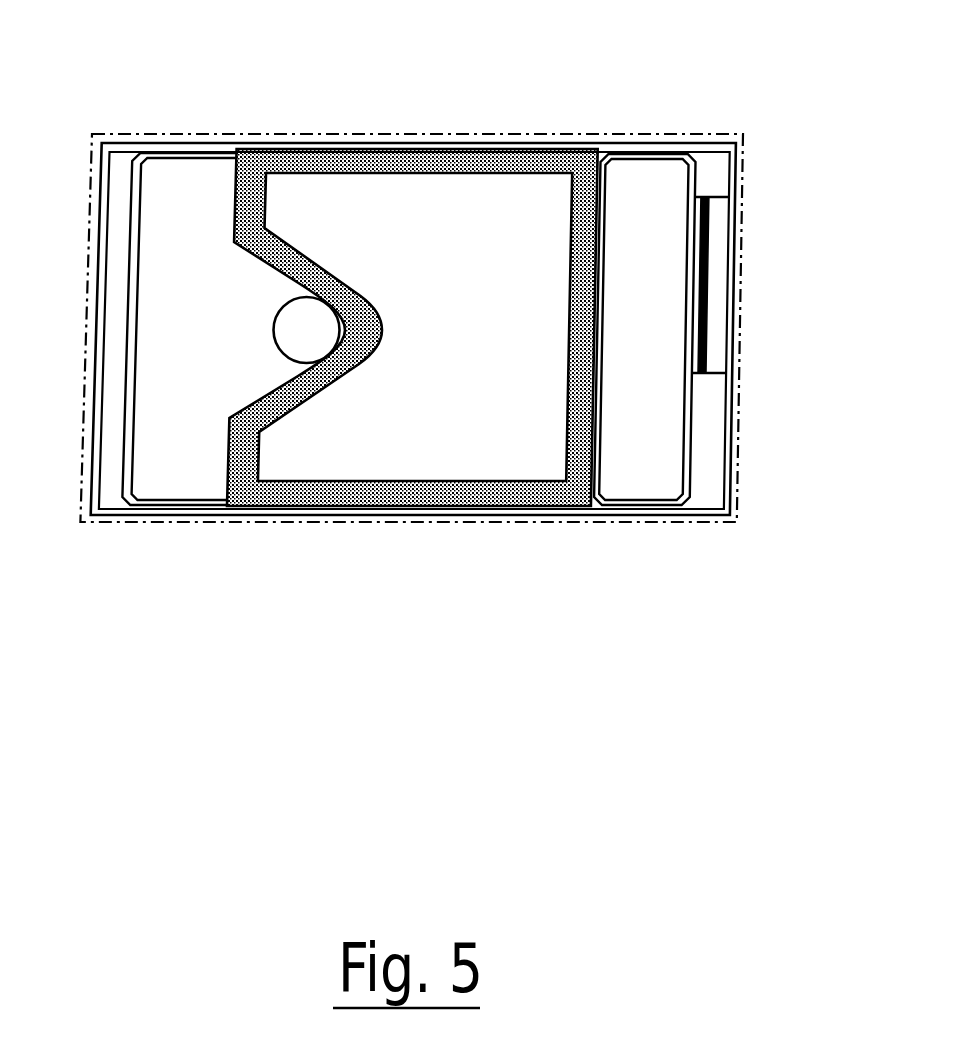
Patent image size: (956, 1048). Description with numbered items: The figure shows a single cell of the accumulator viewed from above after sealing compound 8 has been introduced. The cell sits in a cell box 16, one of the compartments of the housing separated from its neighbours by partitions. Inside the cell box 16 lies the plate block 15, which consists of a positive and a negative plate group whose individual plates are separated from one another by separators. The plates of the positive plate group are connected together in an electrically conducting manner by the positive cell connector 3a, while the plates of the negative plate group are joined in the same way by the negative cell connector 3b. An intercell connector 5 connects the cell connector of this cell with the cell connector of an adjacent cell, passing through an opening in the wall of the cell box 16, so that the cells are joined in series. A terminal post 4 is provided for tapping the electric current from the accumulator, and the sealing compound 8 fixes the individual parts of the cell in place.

The positive cell connector 3a is at (168, 195).
The negative cell connector 3b is at (667, 197).
The terminal post 4 is at (298, 338).
The intercell connector 5 is at (717, 280).
The sealing compound 8 is at (382, 155).
The plate block 15 is at (487, 450).
The cell box 16 is at (160, 518).